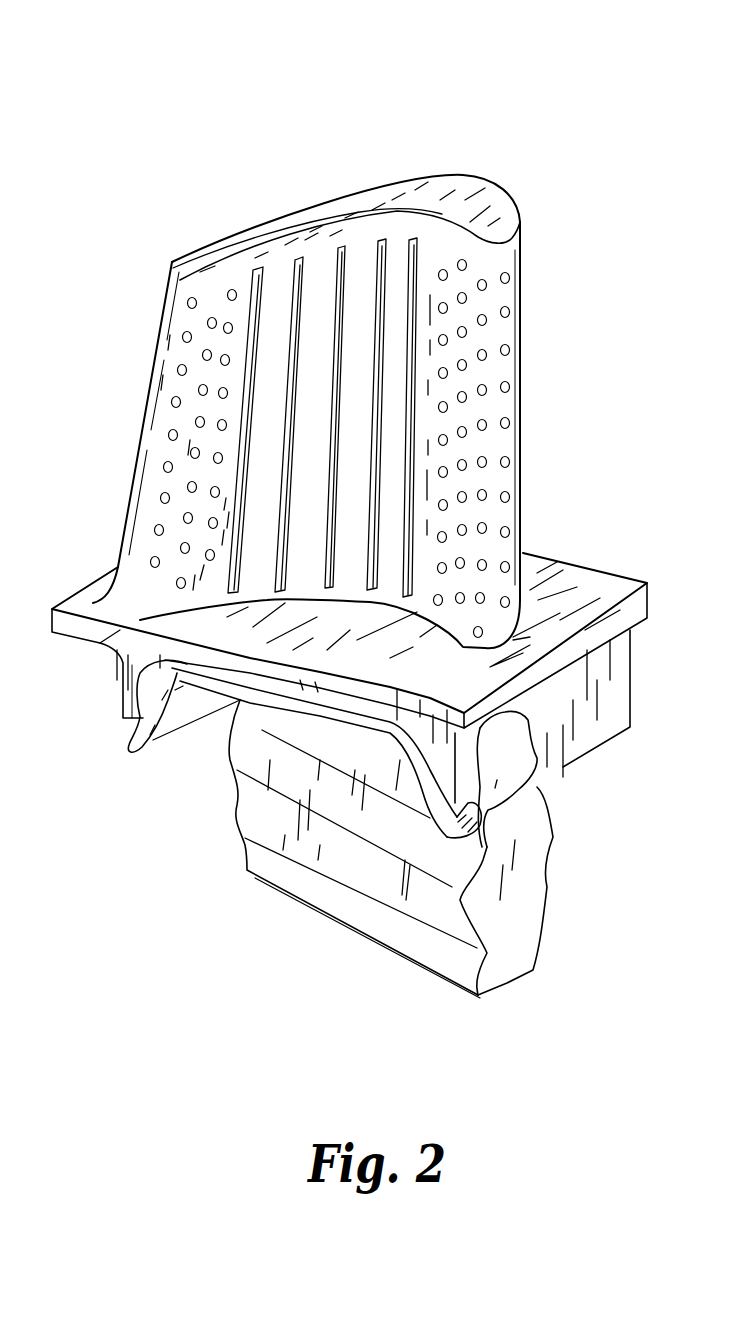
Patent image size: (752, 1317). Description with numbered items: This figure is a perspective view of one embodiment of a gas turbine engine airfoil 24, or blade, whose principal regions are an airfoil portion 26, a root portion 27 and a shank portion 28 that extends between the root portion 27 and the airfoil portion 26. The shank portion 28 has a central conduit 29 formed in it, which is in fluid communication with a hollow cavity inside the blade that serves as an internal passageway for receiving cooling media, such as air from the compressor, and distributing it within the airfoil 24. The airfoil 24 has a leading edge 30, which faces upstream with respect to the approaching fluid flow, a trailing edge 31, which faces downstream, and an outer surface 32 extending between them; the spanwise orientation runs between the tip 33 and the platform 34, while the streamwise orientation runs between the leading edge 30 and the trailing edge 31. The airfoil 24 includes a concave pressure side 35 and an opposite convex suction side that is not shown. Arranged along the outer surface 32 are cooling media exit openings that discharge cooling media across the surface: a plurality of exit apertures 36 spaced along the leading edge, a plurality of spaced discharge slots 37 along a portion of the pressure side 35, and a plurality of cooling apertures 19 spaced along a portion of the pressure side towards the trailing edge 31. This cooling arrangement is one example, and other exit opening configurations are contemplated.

The gas turbine engine airfoil 24 is at (505, 96).
The cooling apertures 19 is at (177, 583).
The airfoil portion 26 is at (523, 393).
The root portion 27 is at (547, 907).
The shank portion 28 is at (524, 850).
The central conduit 29 is at (477, 810).
The leading edge 30 is at (523, 475).
The trailing edge 31 is at (137, 478).
The outer surface 32 is at (327, 262).
The tip 33 is at (487, 205).
The platform 34 is at (577, 620).
The concave pressure side 35 is at (217, 287).
The exit apertures 36 is at (507, 310).
The discharge slots 37 is at (300, 262).